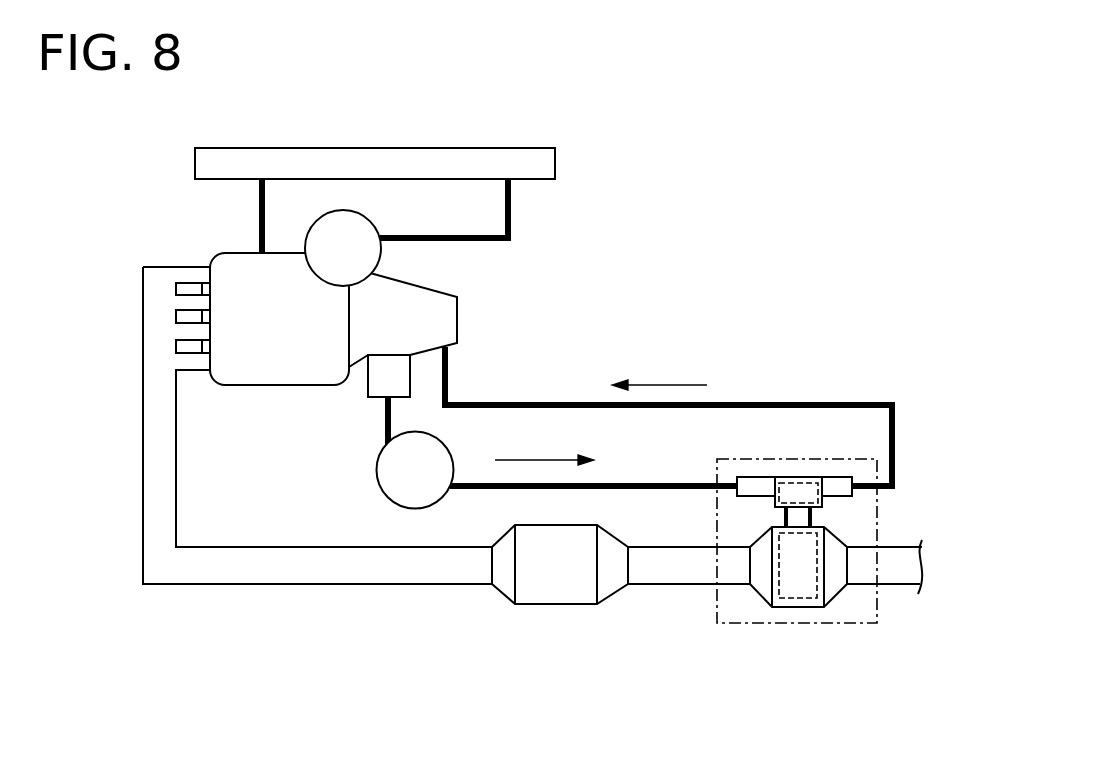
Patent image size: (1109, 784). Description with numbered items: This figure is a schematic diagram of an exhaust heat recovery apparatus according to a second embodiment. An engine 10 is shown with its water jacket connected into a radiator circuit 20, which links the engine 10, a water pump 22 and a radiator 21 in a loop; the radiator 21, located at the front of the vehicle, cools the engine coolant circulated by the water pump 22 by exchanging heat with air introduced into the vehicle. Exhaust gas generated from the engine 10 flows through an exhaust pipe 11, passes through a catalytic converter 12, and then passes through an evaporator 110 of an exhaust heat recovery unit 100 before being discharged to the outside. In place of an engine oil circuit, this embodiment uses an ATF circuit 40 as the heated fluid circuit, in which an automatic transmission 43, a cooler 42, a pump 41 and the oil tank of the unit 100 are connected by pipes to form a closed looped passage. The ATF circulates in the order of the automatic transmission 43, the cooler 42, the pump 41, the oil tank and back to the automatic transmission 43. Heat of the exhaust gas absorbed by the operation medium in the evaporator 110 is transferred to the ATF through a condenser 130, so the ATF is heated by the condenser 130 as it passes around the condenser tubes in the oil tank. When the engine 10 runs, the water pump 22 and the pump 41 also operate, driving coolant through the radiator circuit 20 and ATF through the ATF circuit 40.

The engine 10 is at (243, 385).
The exhaust pipe 11 is at (247, 584).
The catalytic converter 12 is at (548, 605).
The radiator circuit 20 is at (511, 212).
The radiator 21 is at (483, 148).
The water pump 22 is at (373, 214).
The ATF circuit 40 is at (772, 402).
The pump 41 is at (377, 472).
The cooler 42 is at (369, 395).
The automatic transmission 43 is at (428, 283).
The unit 100 is at (752, 624).
The evaporator 110 is at (800, 607).
The condenser 130 is at (796, 477).